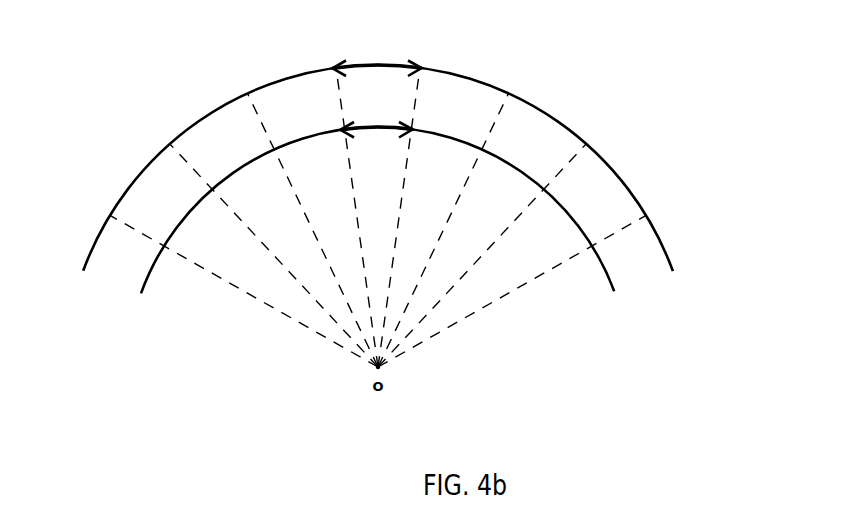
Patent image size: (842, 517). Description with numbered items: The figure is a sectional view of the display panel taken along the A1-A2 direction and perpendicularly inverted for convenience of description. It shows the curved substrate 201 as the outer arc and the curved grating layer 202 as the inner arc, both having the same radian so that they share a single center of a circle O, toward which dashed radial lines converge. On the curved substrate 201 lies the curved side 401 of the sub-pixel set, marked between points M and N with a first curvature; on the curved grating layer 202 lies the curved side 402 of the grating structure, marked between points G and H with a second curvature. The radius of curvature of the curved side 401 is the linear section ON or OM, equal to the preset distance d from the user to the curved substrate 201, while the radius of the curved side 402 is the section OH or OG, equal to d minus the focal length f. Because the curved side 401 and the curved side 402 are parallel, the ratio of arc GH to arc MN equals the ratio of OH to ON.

The curved substrate 201 is at (662, 235).
The curved grating layer 202 is at (610, 278).
The curved side of the sub-pixel set 401 is at (393, 60).
The curved side of the grating structure 402 is at (404, 122).